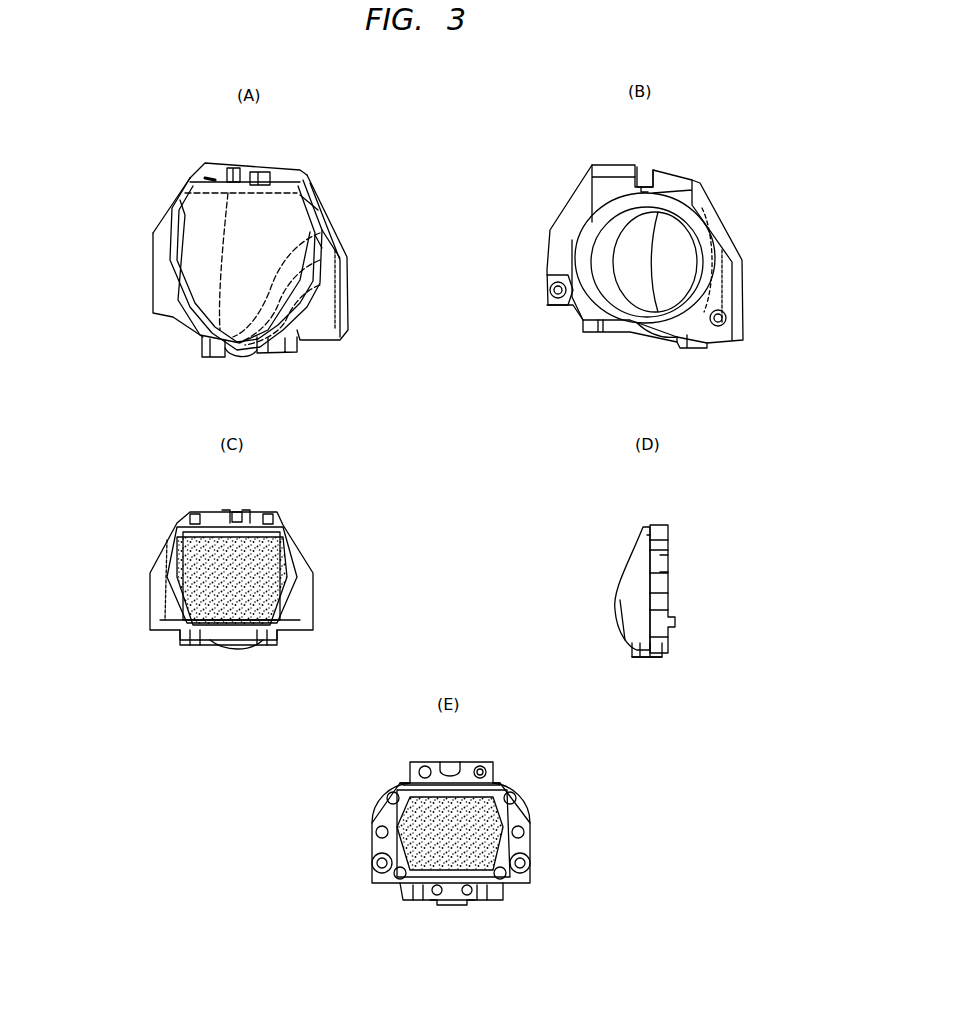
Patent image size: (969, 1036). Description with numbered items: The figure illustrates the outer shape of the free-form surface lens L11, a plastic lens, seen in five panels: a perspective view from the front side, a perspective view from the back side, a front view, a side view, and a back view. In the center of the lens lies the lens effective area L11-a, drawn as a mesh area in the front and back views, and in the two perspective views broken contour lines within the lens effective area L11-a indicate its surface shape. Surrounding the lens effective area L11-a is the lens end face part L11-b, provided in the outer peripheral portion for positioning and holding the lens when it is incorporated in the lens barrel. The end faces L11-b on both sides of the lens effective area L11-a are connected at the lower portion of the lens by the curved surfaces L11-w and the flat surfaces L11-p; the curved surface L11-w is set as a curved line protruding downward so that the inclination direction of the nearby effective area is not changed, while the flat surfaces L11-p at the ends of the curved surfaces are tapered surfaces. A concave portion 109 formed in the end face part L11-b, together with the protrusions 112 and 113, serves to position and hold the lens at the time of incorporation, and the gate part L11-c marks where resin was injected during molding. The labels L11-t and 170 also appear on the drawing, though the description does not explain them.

The free-form surface lens L11 is at (443, 542).
The lens effective area L11-a is at (183, 233).
The lens end face part L11-b is at (162, 298).
The tab portion L11-t is at (210, 180).
The flat surface L11-p is at (210, 353).
The gate part L11-c is at (227, 355).
The curved surface L11-w is at (257, 528).
The concave portion 109 is at (243, 168).
The protrusion 112 is at (553, 290).
The protrusion 113 is at (727, 337).
The hole 170 is at (482, 768).